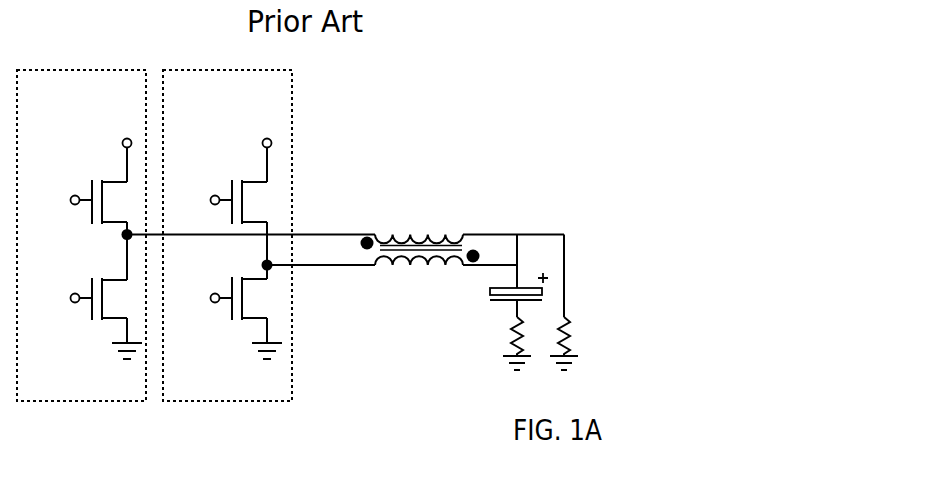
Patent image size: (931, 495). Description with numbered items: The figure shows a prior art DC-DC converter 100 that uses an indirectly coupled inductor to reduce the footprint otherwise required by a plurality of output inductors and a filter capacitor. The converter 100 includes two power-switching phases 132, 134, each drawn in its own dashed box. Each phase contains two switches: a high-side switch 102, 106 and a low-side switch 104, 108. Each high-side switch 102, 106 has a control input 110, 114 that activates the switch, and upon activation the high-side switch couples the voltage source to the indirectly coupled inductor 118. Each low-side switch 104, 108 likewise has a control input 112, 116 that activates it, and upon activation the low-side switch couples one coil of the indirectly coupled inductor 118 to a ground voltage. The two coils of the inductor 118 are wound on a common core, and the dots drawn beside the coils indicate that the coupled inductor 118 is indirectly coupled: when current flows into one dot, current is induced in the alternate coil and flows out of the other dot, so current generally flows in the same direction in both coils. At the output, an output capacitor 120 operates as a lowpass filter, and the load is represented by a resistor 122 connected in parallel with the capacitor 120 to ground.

The DC-DC converter 100 is at (332, 470).
The power-switching phase 132 is at (95, 98).
The power-switching phase 134 is at (242, 98).
The high-side switch 102 is at (107, 173).
The low-side switch 104 is at (107, 270).
The high-side switch 106 is at (248, 173).
The low-side switch 108 is at (251, 271).
The control input 110 is at (63, 210).
The control input 112 is at (63, 310).
The control input 114 is at (201, 210).
The control input 116 is at (201, 310).
The indirectly coupled inductor 118 is at (420, 222).
The output capacitor 120 is at (483, 292).
The resistor 122 is at (578, 330).